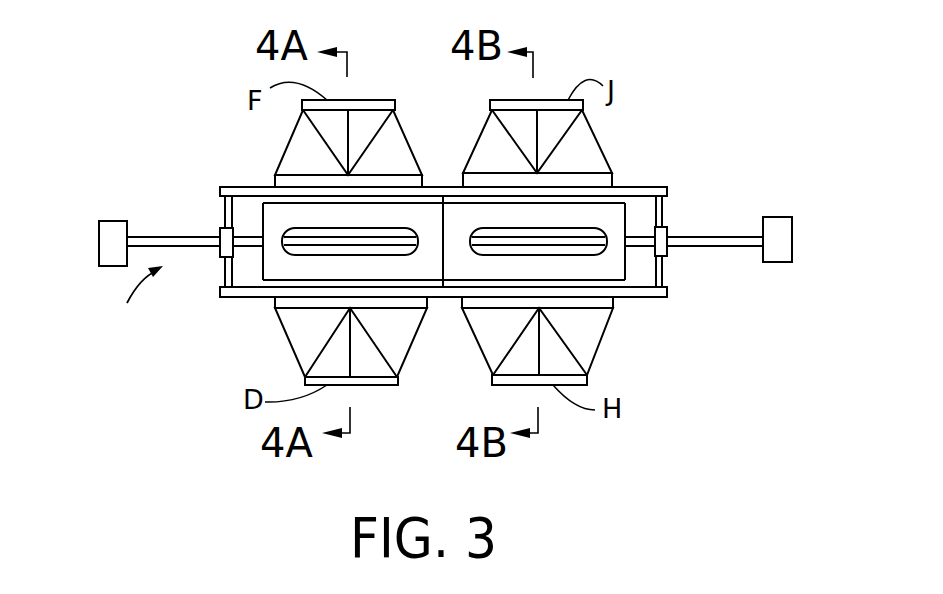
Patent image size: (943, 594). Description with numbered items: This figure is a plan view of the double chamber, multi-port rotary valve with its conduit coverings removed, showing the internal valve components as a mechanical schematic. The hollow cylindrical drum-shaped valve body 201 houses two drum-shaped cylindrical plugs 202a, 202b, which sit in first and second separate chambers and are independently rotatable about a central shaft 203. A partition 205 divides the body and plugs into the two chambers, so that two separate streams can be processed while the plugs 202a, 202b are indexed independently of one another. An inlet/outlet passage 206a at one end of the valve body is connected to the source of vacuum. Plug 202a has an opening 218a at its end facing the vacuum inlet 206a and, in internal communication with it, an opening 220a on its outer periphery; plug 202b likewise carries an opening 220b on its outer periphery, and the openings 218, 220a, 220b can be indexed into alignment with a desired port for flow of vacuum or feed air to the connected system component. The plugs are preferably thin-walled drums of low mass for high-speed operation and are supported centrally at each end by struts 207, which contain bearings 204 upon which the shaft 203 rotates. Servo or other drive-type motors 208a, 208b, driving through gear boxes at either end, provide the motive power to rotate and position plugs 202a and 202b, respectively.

The valve body 201 is at (642, 293).
The plug 202a is at (312, 217).
The plug 202b is at (558, 220).
The central shaft 203 is at (219, 236).
The bearings 204 is at (667, 244).
The partition 205 is at (442, 217).
The inlet/outlet passage 206a is at (123, 300).
The struts 207 is at (221, 211).
The drive motor 208a is at (113, 215).
The drive motor 208b is at (790, 238).
The slot 218 is at (480, 275).
The end opening 218a is at (233, 270).
The outer peripheral opening 220a is at (307, 268).
The outer peripheral opening 220b is at (567, 257).